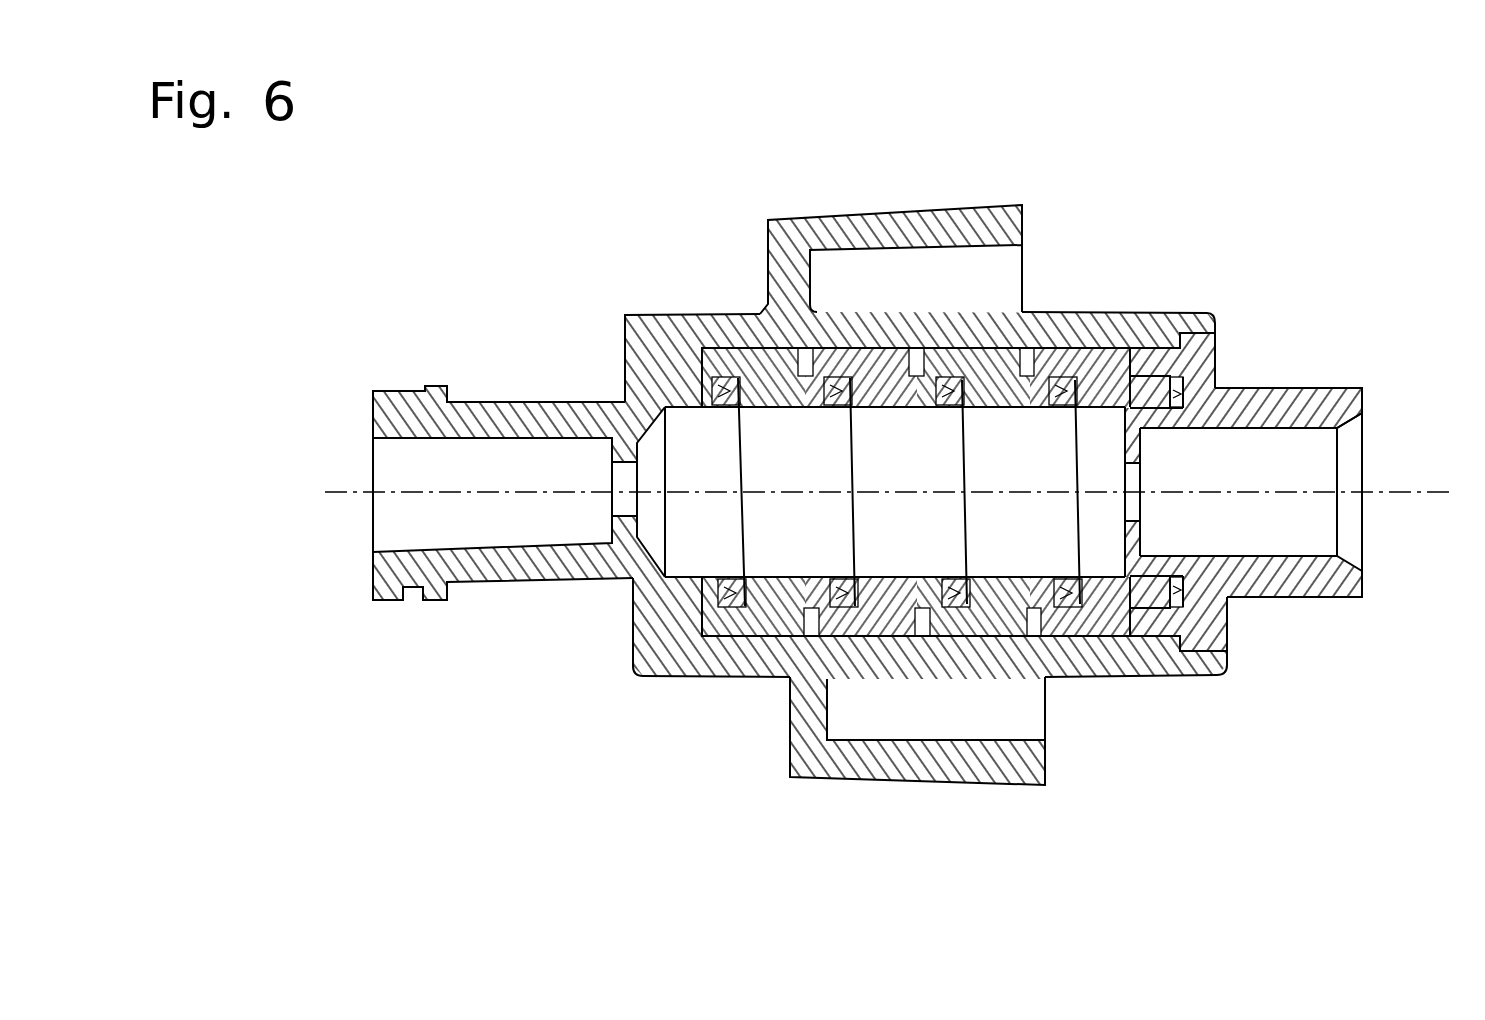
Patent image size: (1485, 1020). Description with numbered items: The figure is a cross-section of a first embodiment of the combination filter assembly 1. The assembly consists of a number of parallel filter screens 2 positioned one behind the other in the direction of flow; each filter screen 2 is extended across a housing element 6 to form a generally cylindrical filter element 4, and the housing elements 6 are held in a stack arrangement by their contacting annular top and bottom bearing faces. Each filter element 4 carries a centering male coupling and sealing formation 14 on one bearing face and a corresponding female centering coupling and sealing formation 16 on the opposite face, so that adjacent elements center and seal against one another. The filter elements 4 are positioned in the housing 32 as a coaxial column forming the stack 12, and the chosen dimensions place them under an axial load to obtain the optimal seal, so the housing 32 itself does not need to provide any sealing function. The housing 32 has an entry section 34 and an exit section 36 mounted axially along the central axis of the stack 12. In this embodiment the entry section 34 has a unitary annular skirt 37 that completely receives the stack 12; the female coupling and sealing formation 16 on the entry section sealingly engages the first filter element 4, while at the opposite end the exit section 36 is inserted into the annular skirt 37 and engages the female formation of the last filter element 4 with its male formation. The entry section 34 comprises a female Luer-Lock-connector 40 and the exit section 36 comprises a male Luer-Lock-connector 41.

The combination filter assembly 1 is at (1180, 678).
The filter screen 2 is at (963, 457).
The filter element 4 is at (1080, 390).
The housing element 6 is at (973, 367).
The stack 12 is at (742, 638).
The centering male coupling and sealing formation 14 is at (1220, 368).
The female centering coupling and sealing formation 16 is at (713, 582).
The housing 32 is at (838, 232).
The entry section 34 is at (373, 407).
The exit section 36 is at (1295, 602).
The annular skirt 37 is at (1093, 662).
The female Luer-Lock-connector 40 is at (397, 598).
The male Luer-Lock-connector 41 is at (1293, 398).